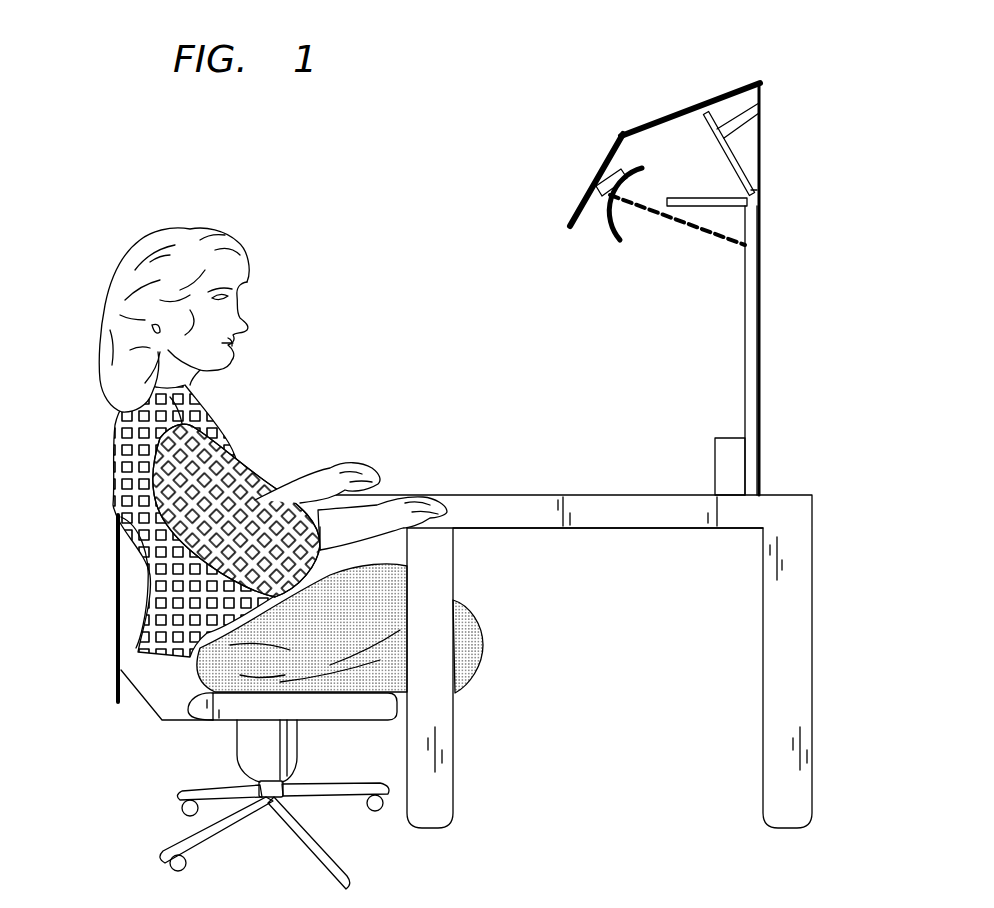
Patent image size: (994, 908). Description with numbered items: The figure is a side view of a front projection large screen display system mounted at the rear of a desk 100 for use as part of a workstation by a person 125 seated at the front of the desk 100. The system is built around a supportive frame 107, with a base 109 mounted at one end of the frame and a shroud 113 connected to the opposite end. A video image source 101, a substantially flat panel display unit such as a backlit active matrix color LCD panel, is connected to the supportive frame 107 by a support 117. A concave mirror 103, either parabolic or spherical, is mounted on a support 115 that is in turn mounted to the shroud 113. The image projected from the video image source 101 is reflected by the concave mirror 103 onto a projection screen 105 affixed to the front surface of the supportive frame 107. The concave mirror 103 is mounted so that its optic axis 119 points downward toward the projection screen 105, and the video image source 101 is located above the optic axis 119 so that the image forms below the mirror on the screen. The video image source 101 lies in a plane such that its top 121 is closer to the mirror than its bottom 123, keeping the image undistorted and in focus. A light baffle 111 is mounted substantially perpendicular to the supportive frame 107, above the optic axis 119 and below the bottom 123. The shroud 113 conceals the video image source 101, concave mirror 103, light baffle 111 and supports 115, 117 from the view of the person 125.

The desk 100 is at (525, 495).
The video image source 101 is at (695, 110).
The concave mirror 103 is at (610, 168).
The projection screen 105 is at (743, 380).
The supportive frame 107 is at (762, 352).
The base 109 is at (715, 472).
The light baffle 111 is at (717, 208).
The shroud 113 is at (574, 214).
The support 115 is at (598, 196).
The support 117 is at (738, 115).
The optic axis 119 is at (675, 219).
The top 121 is at (725, 156).
The bottom 123 is at (755, 176).
The person 125 is at (117, 442).